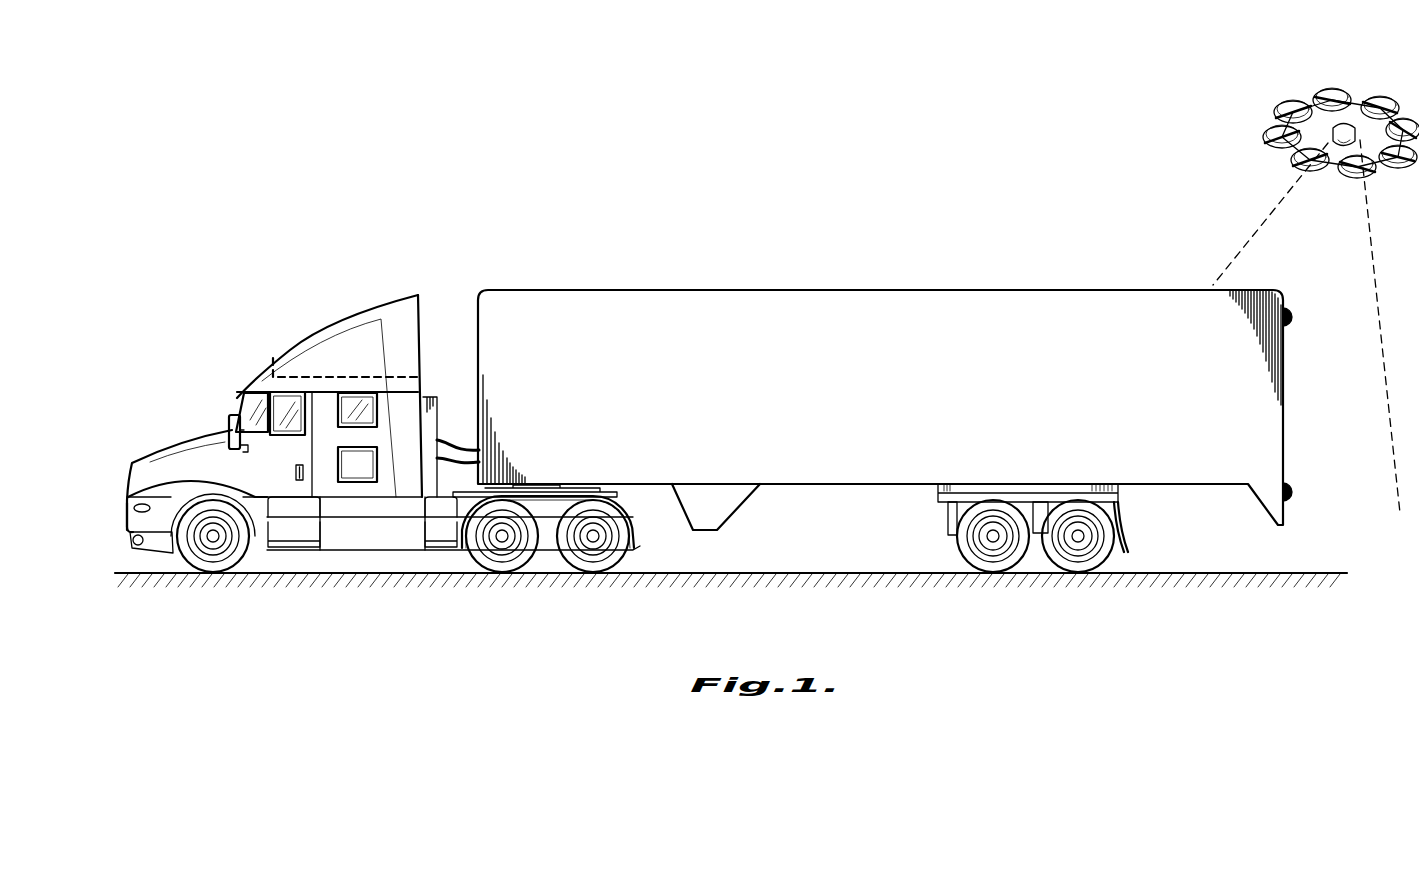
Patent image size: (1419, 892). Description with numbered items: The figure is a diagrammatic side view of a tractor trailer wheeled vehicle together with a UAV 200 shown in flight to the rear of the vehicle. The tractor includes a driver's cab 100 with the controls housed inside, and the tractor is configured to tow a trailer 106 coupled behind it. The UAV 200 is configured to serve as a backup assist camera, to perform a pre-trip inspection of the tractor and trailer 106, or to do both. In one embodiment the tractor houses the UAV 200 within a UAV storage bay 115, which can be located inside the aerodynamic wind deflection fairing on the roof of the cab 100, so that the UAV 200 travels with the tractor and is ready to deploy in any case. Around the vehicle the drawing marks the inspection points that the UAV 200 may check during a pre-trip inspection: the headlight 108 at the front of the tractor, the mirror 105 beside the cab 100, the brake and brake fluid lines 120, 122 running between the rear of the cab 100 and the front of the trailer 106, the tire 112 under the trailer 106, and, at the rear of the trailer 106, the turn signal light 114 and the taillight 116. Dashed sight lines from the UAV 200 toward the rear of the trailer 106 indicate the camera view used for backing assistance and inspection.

The driver's cab 100 is at (294, 298).
The mirror 105 is at (233, 414).
The trailer 106 is at (966, 292).
The headlight 108 is at (123, 512).
The tire 112 is at (958, 541).
The turn signal light 114 is at (1291, 315).
The UAV storage bay 115 is at (407, 368).
The taillight 116 is at (1291, 495).
The brake and brake fluid line 120 is at (470, 450).
The brake and brake fluid line 122 is at (471, 458).
The UAV 200 is at (1281, 90).